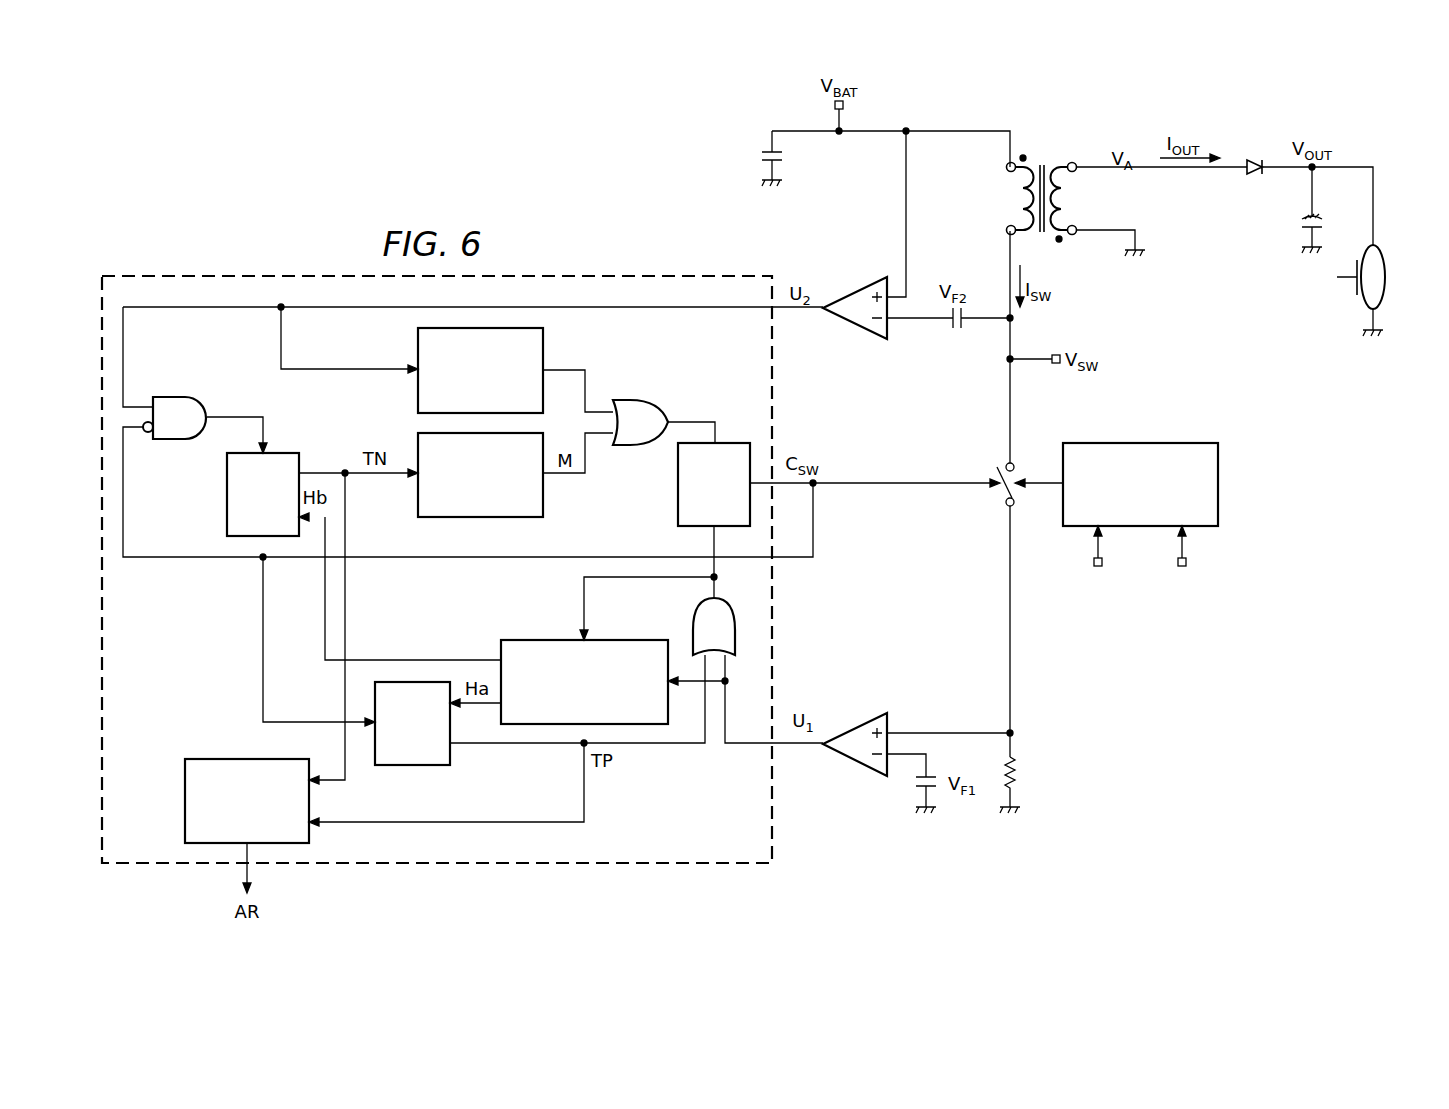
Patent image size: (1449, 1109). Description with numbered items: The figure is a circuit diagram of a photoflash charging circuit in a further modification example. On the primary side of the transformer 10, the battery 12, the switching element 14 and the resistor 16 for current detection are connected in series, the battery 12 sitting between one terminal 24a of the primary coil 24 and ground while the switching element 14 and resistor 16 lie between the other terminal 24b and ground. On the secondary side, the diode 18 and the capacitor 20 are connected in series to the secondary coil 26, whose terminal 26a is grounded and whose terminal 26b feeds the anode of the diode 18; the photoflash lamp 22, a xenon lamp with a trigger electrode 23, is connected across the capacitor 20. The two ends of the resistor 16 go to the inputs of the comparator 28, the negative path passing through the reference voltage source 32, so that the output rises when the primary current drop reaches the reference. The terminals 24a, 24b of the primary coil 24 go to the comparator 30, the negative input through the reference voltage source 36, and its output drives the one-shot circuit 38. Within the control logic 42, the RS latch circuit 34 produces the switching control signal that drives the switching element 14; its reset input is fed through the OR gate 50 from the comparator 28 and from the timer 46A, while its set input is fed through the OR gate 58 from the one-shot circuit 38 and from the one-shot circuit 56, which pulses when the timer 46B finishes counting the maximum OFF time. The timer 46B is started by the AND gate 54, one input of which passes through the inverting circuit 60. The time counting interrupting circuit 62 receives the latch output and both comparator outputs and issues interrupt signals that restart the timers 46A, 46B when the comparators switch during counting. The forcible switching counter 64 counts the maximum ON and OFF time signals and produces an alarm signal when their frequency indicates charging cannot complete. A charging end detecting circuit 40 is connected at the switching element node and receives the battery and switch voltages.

The transformer 10 is at (1042, 160).
The battery 12 is at (762, 156).
The switching element 14 is at (1000, 489).
The resistor for current detection 16 is at (1017, 772).
The diode 18 is at (1252, 158).
The capacitor 20 is at (1300, 217).
The photoflash lamp 22 is at (1386, 268).
The trigger electrode 23 is at (1350, 282).
The primary coil 24 is at (1023, 190).
The terminal of primary coil 24a is at (1006, 165).
The terminal of primary coil 24b is at (1006, 233).
The secondary coil 26 is at (1062, 197).
The terminal of secondary coil 26a is at (1076, 235).
The terminal of secondary coil 26b is at (1076, 162).
The comparator 28 is at (856, 730).
The comparator 30 is at (858, 294).
The reference voltage source 32 is at (914, 783).
The RS latch circuit 34 is at (678, 492).
The reference voltage source 36 is at (956, 332).
The one-shot circuit 38 is at (418, 345).
The charging end detecting circuit 40 is at (1147, 443).
The control logic 42 is at (182, 276).
The timer 46A is at (412, 765).
The timer 46B is at (227, 505).
The OR gate 50 is at (695, 620).
The AND gate 54 is at (172, 397).
The one-shot circuit 56 is at (418, 502).
The OR gate 58 is at (640, 400).
The inverting circuit 60 is at (148, 433).
The time counting interrupting circuit 62 is at (538, 640).
The forcible switching counter 64 is at (240, 759).